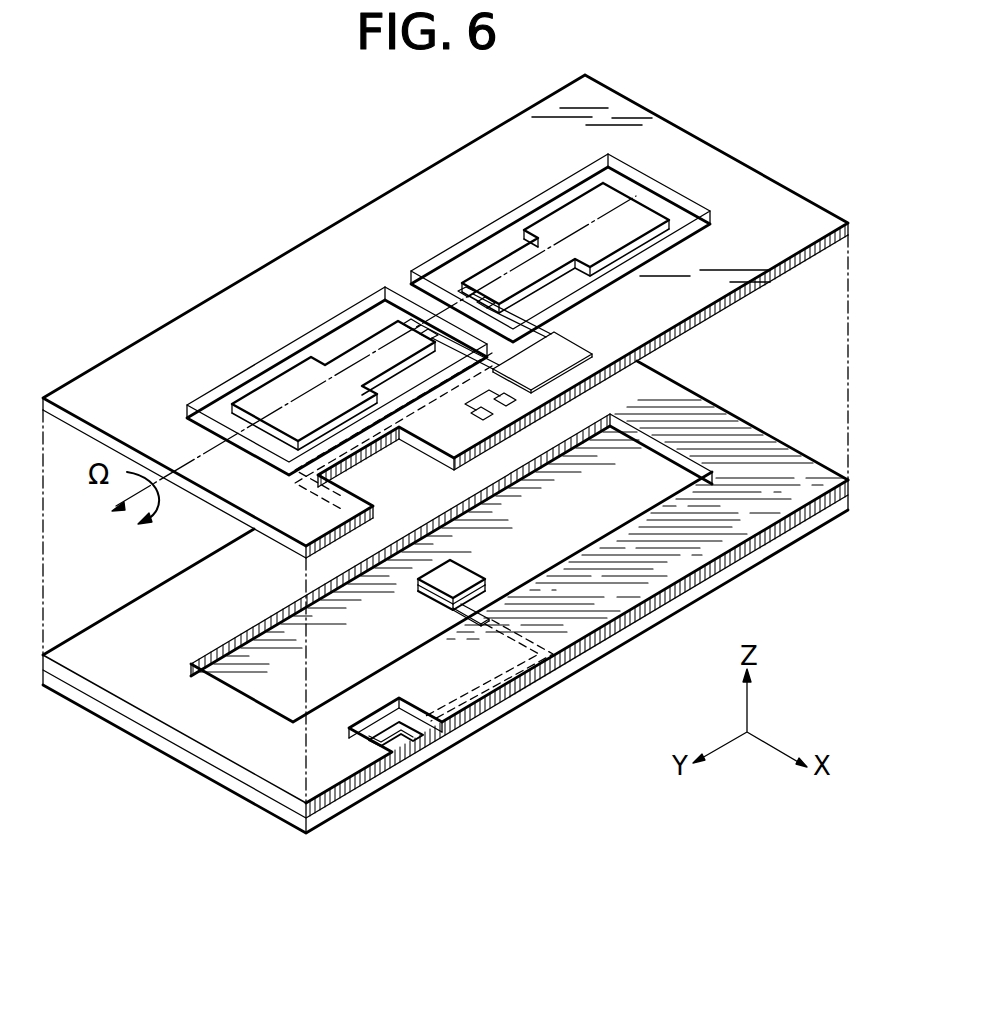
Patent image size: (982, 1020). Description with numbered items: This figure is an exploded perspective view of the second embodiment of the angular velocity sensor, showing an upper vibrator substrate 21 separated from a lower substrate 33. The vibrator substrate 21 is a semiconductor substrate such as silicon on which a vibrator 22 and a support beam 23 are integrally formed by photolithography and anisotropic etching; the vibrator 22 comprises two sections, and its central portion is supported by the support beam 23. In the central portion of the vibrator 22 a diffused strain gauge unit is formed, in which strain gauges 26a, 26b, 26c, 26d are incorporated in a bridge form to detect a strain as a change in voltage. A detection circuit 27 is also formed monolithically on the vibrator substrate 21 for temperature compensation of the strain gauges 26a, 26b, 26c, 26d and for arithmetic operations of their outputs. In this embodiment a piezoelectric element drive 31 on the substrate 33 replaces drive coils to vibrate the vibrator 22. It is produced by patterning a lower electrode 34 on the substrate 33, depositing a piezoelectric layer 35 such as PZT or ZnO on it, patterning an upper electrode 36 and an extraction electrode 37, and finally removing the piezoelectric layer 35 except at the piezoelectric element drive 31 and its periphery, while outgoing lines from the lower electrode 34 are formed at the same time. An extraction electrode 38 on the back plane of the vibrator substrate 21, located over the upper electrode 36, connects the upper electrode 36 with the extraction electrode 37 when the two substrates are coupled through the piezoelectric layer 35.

The vibrator substrate 21 is at (775, 196).
The vibrator 22 is at (645, 215).
The support beam 23 is at (402, 272).
The strain gauge 26a is at (478, 286).
The strain gauge 26b is at (494, 296).
The strain gauge 26c is at (408, 321).
The strain gauge 26d is at (420, 334).
The detection circuit 27 is at (562, 343).
The piezoelectric element drive 31 is at (461, 618).
The substrate 33 is at (740, 578).
The lower electrode 34 is at (488, 601).
The piezoelectric layer 35 is at (484, 590).
The upper electrode 36 is at (453, 567).
The extraction electrode 37 is at (393, 760).
The extraction electrode 38 is at (347, 496).